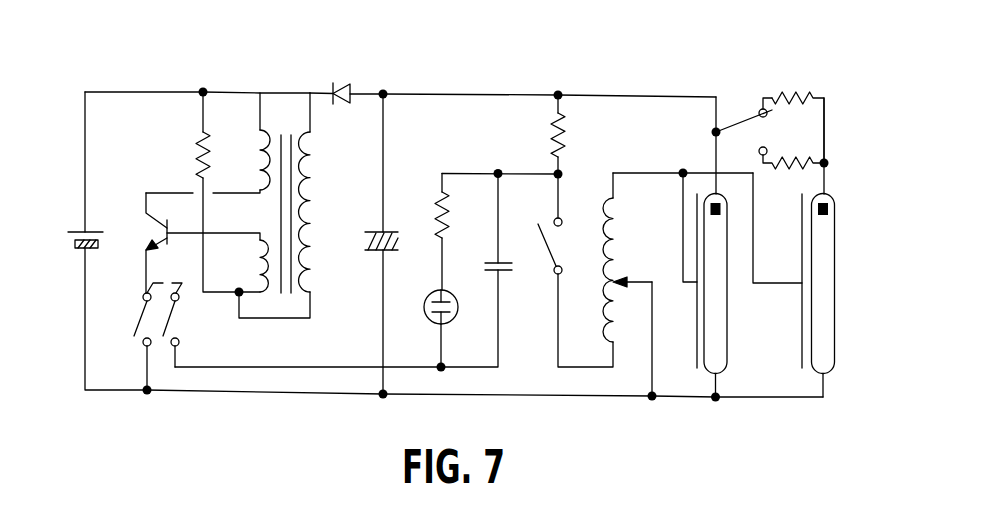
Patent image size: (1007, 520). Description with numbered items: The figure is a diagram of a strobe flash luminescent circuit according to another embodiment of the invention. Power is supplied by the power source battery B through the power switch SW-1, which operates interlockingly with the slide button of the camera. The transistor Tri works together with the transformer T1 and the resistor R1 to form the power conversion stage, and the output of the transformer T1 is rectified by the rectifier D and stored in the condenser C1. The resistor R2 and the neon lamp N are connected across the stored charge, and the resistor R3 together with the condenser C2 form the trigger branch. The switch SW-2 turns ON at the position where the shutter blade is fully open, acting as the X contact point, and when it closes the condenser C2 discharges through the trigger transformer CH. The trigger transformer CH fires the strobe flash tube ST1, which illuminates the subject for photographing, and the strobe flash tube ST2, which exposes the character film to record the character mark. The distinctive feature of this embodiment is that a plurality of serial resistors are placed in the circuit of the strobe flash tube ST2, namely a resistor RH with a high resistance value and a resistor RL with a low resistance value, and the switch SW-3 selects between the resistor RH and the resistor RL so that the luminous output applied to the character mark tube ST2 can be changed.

The power source battery B is at (73, 173).
The transistor Tri is at (150, 214).
The resistor R1 is at (188, 151).
The transformer T1 is at (285, 171).
The rectifier D is at (338, 77).
The condenser C1 is at (371, 221).
The resistor R2 is at (424, 202).
The neon lamp N is at (431, 323).
The condenser C2 is at (511, 289).
The power switch SW-1 is at (183, 314).
The switch SW-2 is at (532, 234).
The switch SW-3 is at (706, 97).
The resistor R3 is at (580, 142).
The transformer for trigger CH is at (629, 270).
The strobe flash tube for photographing ST1 is at (741, 284).
The strobe flash tube for the character mark ST2 is at (852, 284).
The resistor with a high resistance value RH is at (825, 118).
The resistor with a low resistance value RL is at (815, 165).